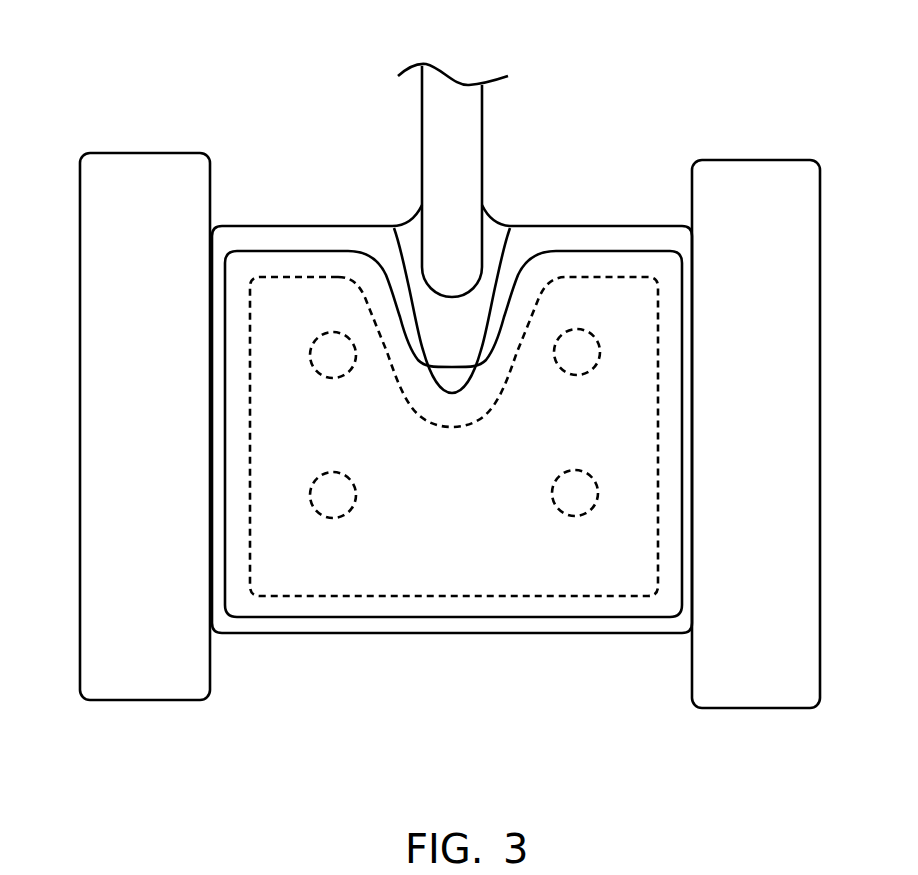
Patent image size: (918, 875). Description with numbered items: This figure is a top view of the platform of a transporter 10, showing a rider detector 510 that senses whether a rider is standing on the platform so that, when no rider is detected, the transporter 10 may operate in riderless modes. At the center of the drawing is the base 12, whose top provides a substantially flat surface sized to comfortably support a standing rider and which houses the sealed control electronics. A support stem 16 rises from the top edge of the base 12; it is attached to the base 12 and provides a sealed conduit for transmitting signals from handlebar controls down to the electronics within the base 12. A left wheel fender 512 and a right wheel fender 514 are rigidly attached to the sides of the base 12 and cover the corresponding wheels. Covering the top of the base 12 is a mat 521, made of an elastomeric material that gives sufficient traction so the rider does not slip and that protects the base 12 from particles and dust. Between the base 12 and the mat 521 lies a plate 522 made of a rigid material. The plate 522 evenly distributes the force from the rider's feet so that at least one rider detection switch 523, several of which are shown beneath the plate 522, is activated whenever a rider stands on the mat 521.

The transporter 10 is at (62, 101).
The base 12 is at (245, 635).
The support stem 16 is at (483, 122).
The rider detector 510 is at (636, 174).
The left wheel fender 512 is at (133, 702).
The right wheel fender 514 is at (758, 710).
The mat 521 is at (367, 618).
The plate 522 is at (492, 600).
The rider detection switch 523 is at (327, 333).